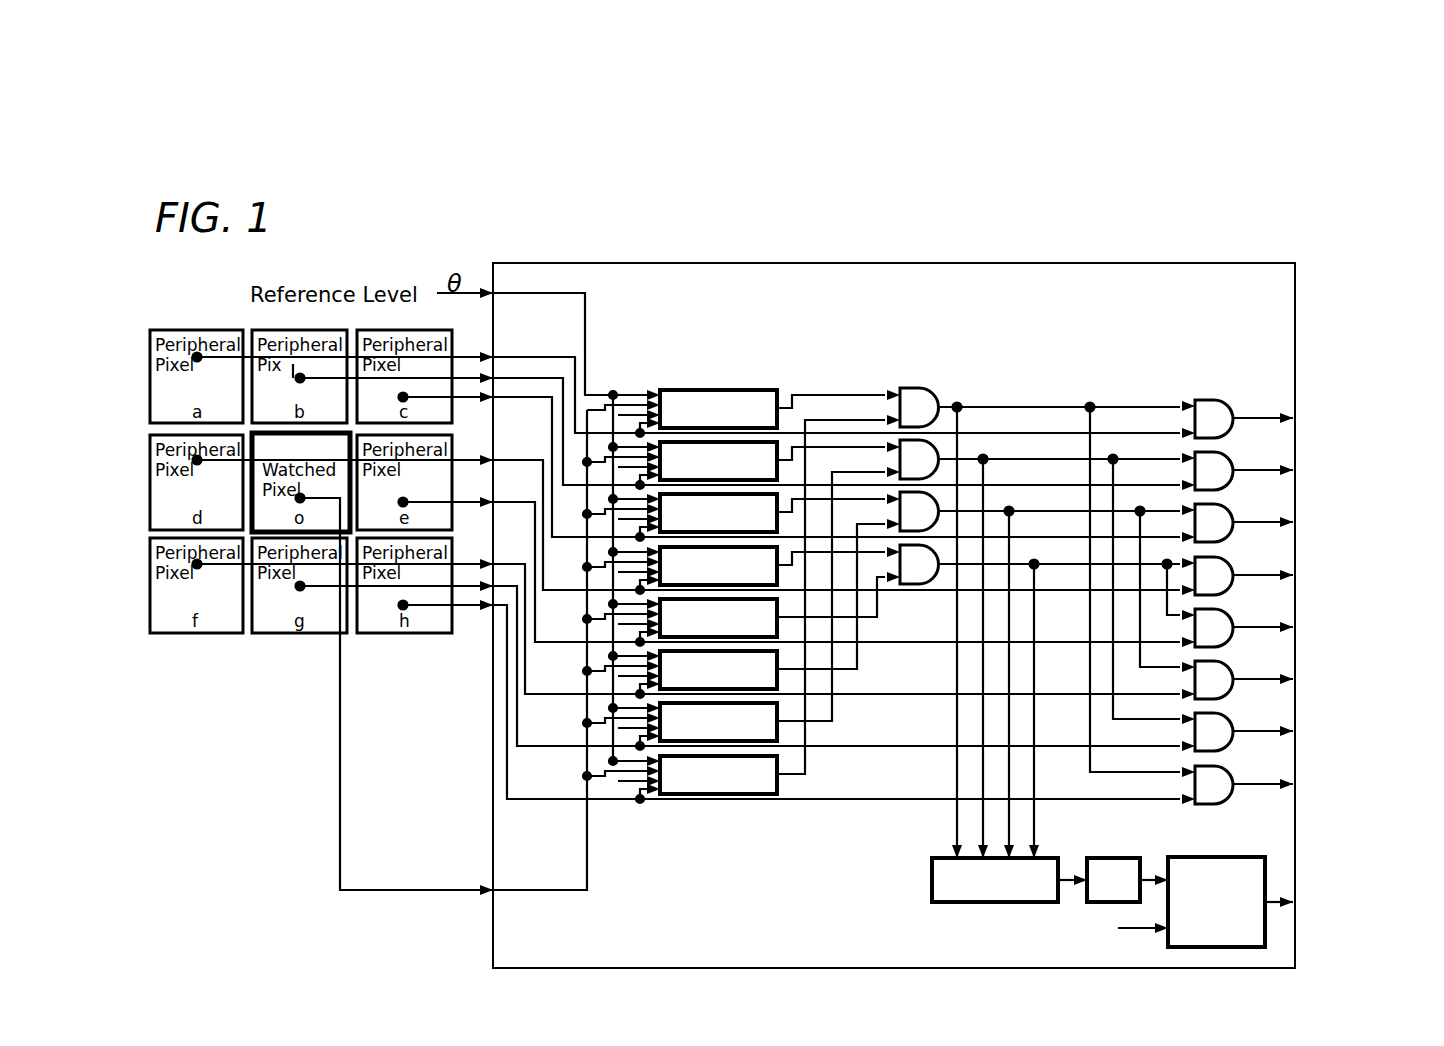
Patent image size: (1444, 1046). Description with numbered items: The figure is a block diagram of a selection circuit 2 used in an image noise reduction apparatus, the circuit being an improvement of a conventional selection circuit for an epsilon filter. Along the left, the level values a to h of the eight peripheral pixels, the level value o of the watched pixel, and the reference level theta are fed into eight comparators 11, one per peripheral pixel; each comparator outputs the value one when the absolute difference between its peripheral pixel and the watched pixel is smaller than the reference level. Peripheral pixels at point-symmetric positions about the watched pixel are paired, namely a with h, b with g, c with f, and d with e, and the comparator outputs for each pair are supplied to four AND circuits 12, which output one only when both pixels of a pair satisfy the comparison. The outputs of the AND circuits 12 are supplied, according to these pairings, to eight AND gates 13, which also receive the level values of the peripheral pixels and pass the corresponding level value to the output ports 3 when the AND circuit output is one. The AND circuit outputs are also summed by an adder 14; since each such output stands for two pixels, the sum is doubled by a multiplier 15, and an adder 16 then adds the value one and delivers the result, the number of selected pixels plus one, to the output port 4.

The selection circuit 2 is at (1214, 263).
The output ports 3 is at (1340, 392).
The output port 4 is at (1348, 880).
The comparators 11 is at (718, 390).
The AND circuits 12 is at (916, 388).
The AND gates 13 is at (1213, 400).
The adder 14 is at (988, 904).
The multiplier 15 is at (1107, 858).
The adder 16 is at (1215, 858).